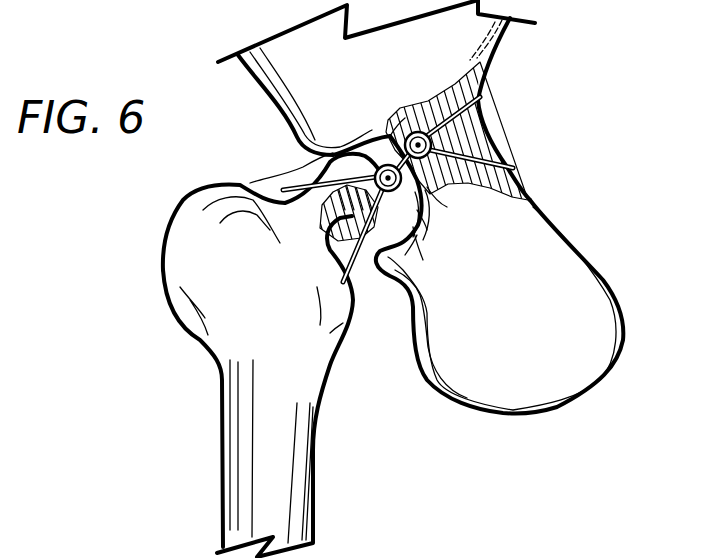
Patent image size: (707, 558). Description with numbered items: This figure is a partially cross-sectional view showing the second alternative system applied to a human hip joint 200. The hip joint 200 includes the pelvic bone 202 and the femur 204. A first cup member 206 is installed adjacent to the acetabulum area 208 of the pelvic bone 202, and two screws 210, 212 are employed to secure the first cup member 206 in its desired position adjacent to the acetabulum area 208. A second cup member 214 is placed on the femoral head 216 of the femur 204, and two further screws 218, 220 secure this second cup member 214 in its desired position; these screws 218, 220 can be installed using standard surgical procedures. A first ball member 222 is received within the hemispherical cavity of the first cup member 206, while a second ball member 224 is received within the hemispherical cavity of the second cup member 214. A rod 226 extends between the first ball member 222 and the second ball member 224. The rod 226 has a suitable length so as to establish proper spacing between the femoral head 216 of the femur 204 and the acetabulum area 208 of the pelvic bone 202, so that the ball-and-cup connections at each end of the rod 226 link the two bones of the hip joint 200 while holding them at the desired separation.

The hip joint 200 is at (583, 277).
The pelvic bone 202 is at (500, 33).
The femur 204 is at (237, 457).
The first cup member 206 is at (432, 142).
The acetabulum area 208 is at (330, 160).
The screw 210 is at (477, 98).
The screw 212 is at (513, 162).
The second cup member 214 is at (372, 165).
The femoral head 216 is at (413, 227).
The screw 218 is at (303, 183).
The screw 220 is at (367, 240).
The first ball member 222 is at (397, 127).
The second ball member 224 is at (417, 210).
The rod 226 is at (427, 187).